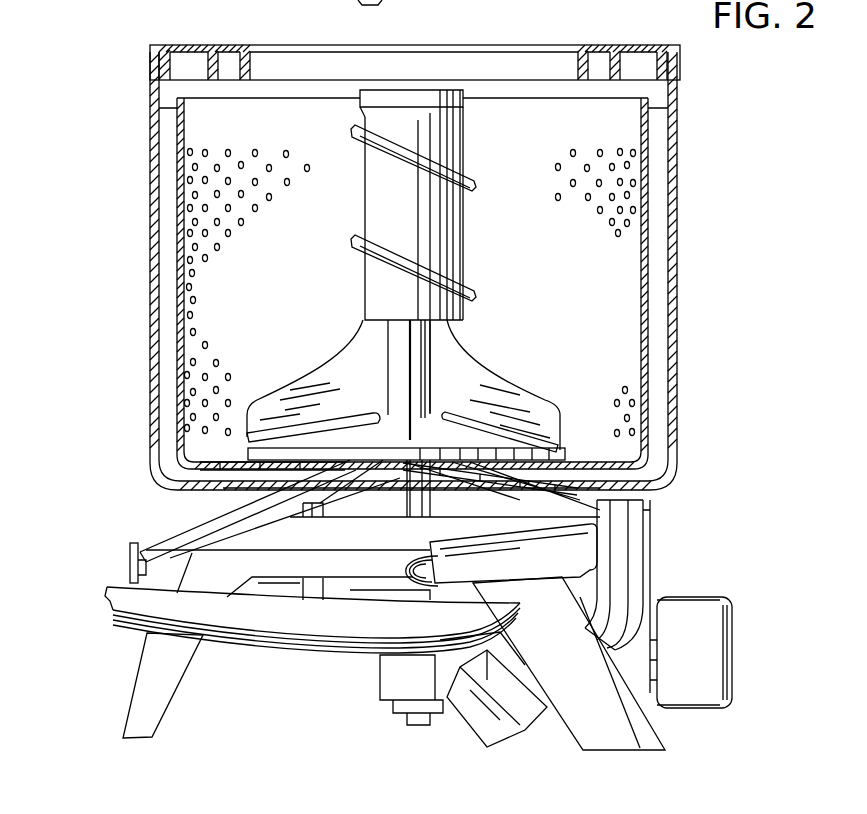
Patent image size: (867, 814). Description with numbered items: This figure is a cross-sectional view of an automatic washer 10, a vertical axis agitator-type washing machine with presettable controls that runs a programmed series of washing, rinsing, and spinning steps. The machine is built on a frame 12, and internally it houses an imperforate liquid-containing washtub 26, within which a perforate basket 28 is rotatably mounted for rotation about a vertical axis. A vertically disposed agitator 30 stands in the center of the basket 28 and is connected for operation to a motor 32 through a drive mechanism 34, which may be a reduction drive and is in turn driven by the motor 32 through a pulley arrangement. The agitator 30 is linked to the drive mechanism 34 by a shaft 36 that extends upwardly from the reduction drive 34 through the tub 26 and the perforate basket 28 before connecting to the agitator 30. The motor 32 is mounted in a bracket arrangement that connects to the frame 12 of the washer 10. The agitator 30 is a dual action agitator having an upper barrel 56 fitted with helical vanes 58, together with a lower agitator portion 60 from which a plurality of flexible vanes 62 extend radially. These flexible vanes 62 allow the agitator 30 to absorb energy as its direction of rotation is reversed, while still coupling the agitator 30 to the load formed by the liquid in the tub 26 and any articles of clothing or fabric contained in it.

The automatic washer 10 is at (128, 265).
The frame 12 is at (260, 537).
The washtub 26 is at (152, 178).
The perforate basket 28 is at (180, 215).
The agitator 30 is at (437, 137).
The motor 32 is at (680, 598).
The drive mechanism 34 is at (435, 640).
The shaft 36 is at (405, 490).
The upper barrel 56 is at (420, 210).
The helical vanes 58 is at (375, 153).
The lower agitator portion 60 is at (397, 332).
The flexible vanes 62 is at (307, 393).